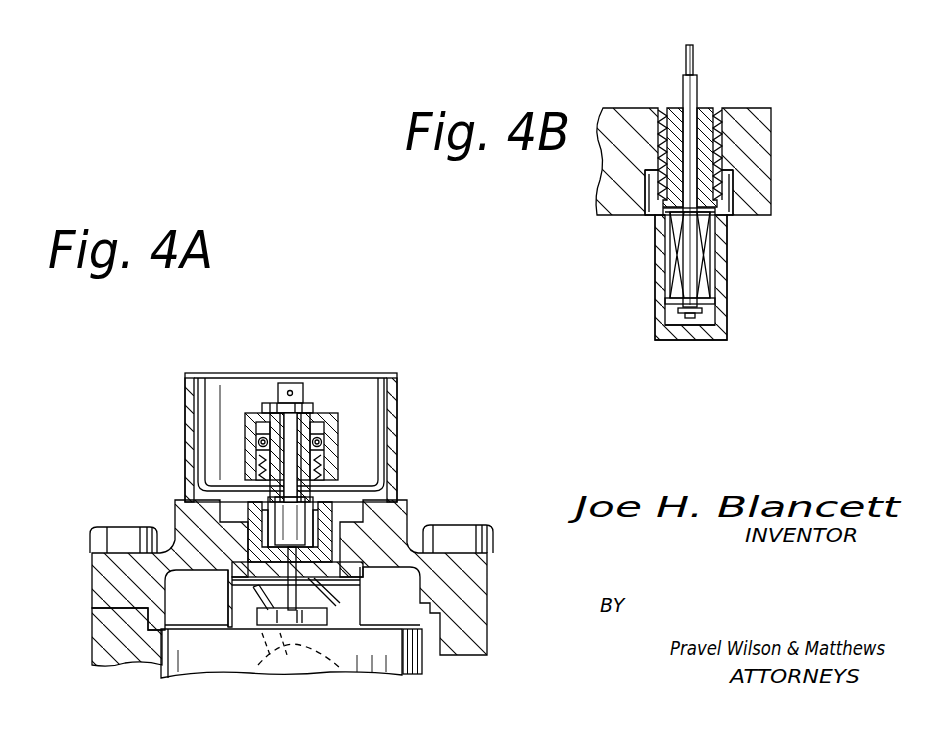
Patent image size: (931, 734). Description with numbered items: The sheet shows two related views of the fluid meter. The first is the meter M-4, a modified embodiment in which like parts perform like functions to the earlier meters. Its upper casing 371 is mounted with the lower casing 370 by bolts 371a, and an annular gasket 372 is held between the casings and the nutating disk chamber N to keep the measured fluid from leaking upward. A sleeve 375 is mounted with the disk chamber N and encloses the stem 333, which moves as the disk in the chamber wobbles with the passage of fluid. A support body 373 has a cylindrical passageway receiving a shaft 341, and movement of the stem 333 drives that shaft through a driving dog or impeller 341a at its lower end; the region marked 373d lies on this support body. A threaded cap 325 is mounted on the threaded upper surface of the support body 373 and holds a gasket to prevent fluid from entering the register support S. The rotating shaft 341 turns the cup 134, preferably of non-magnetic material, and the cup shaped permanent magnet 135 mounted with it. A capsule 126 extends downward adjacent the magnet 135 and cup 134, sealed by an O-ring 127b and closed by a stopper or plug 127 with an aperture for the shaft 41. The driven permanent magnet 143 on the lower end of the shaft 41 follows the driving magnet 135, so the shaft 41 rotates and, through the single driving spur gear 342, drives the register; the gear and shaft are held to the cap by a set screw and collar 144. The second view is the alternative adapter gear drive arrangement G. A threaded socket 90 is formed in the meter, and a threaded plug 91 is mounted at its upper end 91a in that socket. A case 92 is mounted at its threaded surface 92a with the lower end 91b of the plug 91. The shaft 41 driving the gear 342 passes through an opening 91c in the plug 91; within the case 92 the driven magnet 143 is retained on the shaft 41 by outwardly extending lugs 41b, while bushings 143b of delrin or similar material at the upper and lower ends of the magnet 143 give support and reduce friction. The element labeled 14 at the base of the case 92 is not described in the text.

In FIG. 4B, the bottom plate 14 is at (678, 308).
In FIG. 4A, the shaft 41 is at (306, 468).
In FIG. 4B, the shaft 41 is at (688, 260).
In FIG. 4B, the outwardly extending lugs 41b is at (702, 312).
In FIG. 4B, the threaded socket 90 is at (702, 108).
In FIG. 4B, the threaded plug or adapter 91 is at (668, 107).
In FIG. 4B, the upper end of plug 91a is at (723, 122).
In FIG. 4B, the lower end of plug 91b is at (660, 182).
In FIG. 4B, the opening in plug 91c is at (685, 142).
In FIG. 4B, the case 92 is at (727, 237).
In FIG. 4B, the threaded surface of case 92a is at (725, 182).
In FIG. 4A, the capsule 126 is at (262, 468).
In FIG. 4A, the stopper or plug 127 is at (253, 425).
In FIG. 4A, the O-ring 127b is at (253, 442).
In FIG. 4A, the cup 134 is at (410, 506).
In FIG. 4A, the cup shaped permanent magnet 135 is at (333, 532).
In FIG. 4A, the driven permanent magnet 143 is at (338, 505).
In FIG. 4B, the bushings 143b is at (652, 212).
In FIG. 4A, the set screw and collar 144 is at (275, 383).
In FIG. 4A, the threaded cap 325 is at (338, 437).
In FIG. 4A, the stem 333 is at (252, 590).
In FIG. 4A, the shaft 341 is at (298, 588).
In FIG. 4A, the driving dog or impeller 341a is at (290, 622).
In FIG. 4A, the single driving spur gear 342 is at (313, 403).
In FIG. 4A, the lower casing 370 is at (475, 644).
In FIG. 4A, the upper casing 371 is at (490, 560).
In FIG. 4A, the bolts 371a is at (492, 528).
In FIG. 4A, the annular gasket 372 is at (92, 628).
In FIG. 4B, the support body 373 is at (755, 138).
In FIG. 4A, the body wall 373d is at (425, 593).
In FIG. 4A, the sleeve 375 is at (223, 527).
In FIG. 4A, the register support S is at (397, 395).
In FIG. 4A, the nutating disk chamber N is at (408, 672).
In FIG. 4B, the adapter gear drive arrangement G is at (614, 80).
In FIG. 4A, the meter M-4 is at (90, 378).